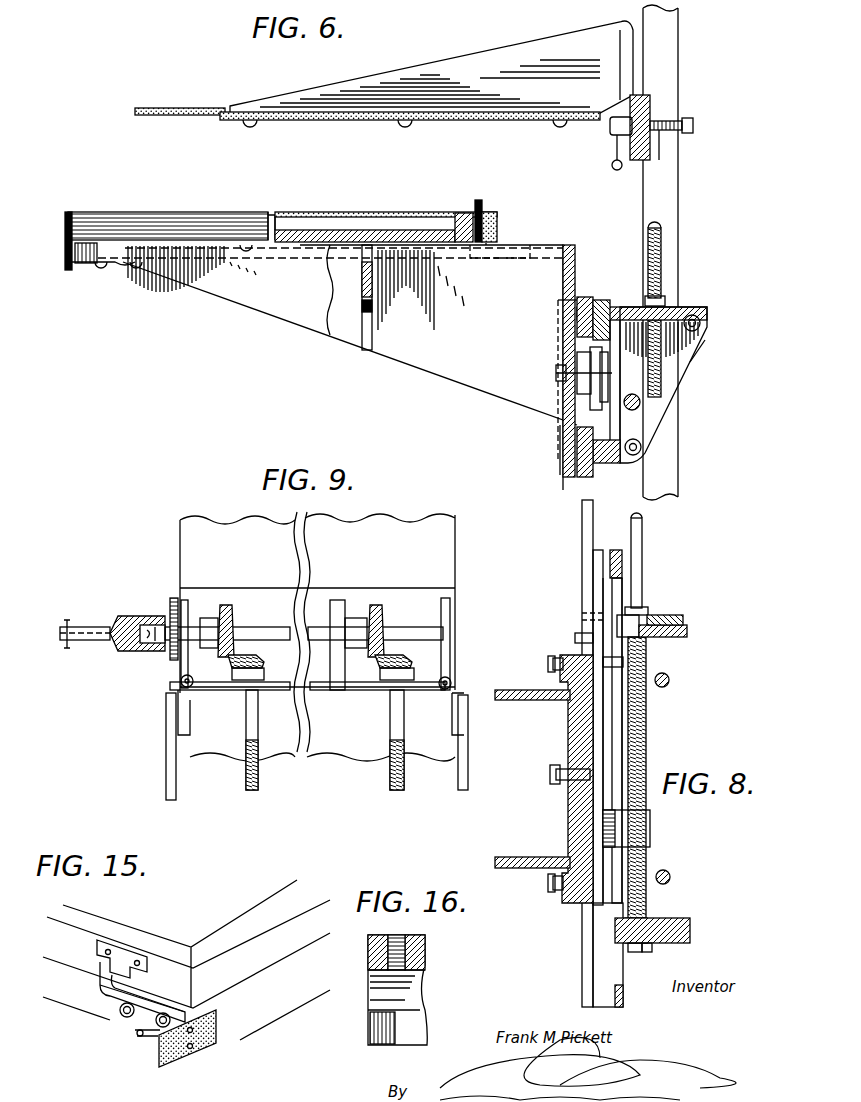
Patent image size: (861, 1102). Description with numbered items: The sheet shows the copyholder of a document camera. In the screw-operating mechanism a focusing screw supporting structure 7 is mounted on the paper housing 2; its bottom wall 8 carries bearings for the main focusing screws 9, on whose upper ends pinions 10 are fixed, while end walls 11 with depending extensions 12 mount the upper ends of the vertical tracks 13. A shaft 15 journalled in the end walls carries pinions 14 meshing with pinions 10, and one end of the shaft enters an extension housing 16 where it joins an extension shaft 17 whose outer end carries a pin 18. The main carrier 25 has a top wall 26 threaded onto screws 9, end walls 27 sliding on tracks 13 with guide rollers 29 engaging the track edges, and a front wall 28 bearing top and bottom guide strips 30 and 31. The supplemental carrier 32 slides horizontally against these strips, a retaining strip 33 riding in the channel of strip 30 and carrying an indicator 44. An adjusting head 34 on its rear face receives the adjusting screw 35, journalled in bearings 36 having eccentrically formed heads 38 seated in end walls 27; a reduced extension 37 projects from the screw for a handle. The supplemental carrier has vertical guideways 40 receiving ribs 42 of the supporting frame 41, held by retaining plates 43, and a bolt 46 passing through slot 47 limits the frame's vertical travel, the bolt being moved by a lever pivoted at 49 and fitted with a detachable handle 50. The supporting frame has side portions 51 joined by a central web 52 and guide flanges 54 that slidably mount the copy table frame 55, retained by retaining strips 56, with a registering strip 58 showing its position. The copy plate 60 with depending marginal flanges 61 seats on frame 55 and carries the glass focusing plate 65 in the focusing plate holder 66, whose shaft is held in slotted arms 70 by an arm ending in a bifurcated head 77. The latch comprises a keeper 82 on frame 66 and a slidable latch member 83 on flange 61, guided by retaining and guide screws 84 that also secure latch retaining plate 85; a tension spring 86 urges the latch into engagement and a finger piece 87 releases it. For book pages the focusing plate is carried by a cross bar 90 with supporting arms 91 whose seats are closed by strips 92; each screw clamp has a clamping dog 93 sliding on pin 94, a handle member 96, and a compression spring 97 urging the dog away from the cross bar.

In FIG. 9, the housing 2 is at (452, 577).
In FIG. 6, the focusing screw supporting structure 7 is at (860, 12).
In FIG. 9, the focusing screw supporting structure 7 is at (173, 687).
In FIG. 6, the bottom wall 8 is at (760, 373).
In FIG. 9, the bottom wall 8 is at (288, 692).
In FIG. 6, the main focusing screws 9 is at (663, 245).
In FIG. 9, the main focusing screws 9 is at (258, 770).
In FIG. 8, the main focusing screws 9 is at (664, 688).
In FIG. 9, the pinions 10 is at (252, 660).
In FIG. 9, the end walls 11 is at (185, 603).
In FIG. 9, the depending extensions 12 is at (190, 717).
In FIG. 6, the vertical tracks 13 is at (662, 196).
In FIG. 9, the vertical tracks 13 is at (180, 757).
In FIG. 8, the vertical tracks 13 is at (675, 616).
In FIG. 9, the pinions 14 is at (230, 604).
In FIG. 9, the shaft 15 is at (270, 626).
In FIG. 9, the extension housing 16 is at (128, 616).
In FIG. 9, the extension shaft 17 is at (92, 627).
In FIG. 9, the pin 18 is at (76, 620).
In FIG. 6, the main carrier 25 is at (708, 332).
In FIG. 8, the main carrier 25 is at (588, 962).
In FIG. 6, the top wall 26 is at (684, 310).
In FIG. 6, the end walls 27 is at (700, 362).
In FIG. 8, the end walls 27 is at (688, 630).
In FIG. 6, the front wall 28 is at (614, 464).
In FIG. 8, the guide rollers 29 is at (650, 953).
In FIG. 6, the top guide strip 30 is at (577, 319).
In FIG. 6, the bottom guide strip 31 is at (599, 466).
In FIG. 8, the bottom guide strip 31 is at (598, 584).
In FIG. 6, the supplemental carrier 32 is at (556, 462).
In FIG. 8, the supplemental carrier 32 is at (584, 911).
In FIG. 6, the retaining strip 33 is at (600, 295).
In FIG. 8, the adjusting head 34 is at (650, 823).
In FIG. 6, the adjusting screw 35 is at (642, 403).
In FIG. 8, the adjusting screw 35 is at (647, 753).
In FIG. 8, the bearings 36 is at (648, 616).
In FIG. 8, the reduced extension 37 is at (642, 545).
In FIG. 8, the eccentrically formed heads 38 is at (637, 953).
In FIG. 6, the vertical guideways 40 is at (576, 470).
In FIG. 8, the vertical guideways 40 is at (570, 681).
In FIG. 6, the supporting frame 41 is at (423, 371).
In FIG. 8, the supporting frame 41 is at (512, 857).
In FIG. 8, the ribs 42 is at (565, 702).
In FIG. 6, the retaining plates 43 is at (562, 468).
In FIG. 8, the retaining plates 43 is at (553, 668).
In FIG. 6, the indicator 44 is at (618, 302).
In FIG. 6, the bolt 46 is at (580, 372).
In FIG. 8, the bolt 46 is at (552, 784).
In FIG. 6, the slot 47 is at (587, 398).
In FIG. 8, the slot 47 is at (576, 769).
In FIG. 8, the pivot 49 is at (618, 663).
In FIG. 8, the detachable handle 50 is at (590, 541).
In FIG. 6, the side portions 51 is at (274, 308).
In FIG. 8, the side portions 51 is at (523, 701).
In FIG. 6, the central web 52 is at (366, 330).
In FIG. 6, the guide flanges 54 is at (530, 258).
In FIG. 6, the copy table frame 55 is at (92, 258).
In FIG. 6, the retaining strips 56 is at (118, 262).
In FIG. 6, the registering strip 58 is at (527, 246).
In FIG. 6, the copy plate 60 is at (347, 210).
In FIG. 6, the depending marginal flanges 61 is at (222, 212).
In FIG. 15, the depending marginal flanges 61 is at (66, 1001).
In FIG. 6, the focusing plate 65 is at (168, 108).
In FIG. 15, the focusing plate holder 66 is at (238, 932).
In FIG. 6, the arms 70 is at (62, 268).
In FIG. 16, the bifurcated head 77 is at (368, 960).
In FIG. 15, the keeper 82 is at (97, 947).
In FIG. 6, the latch member 83 is at (475, 208).
In FIG. 15, the latch member 83 is at (102, 992).
In FIG. 6, the retaining and guide screws 84 is at (492, 230).
In FIG. 15, the retaining and guide screws 84 is at (140, 1005).
In FIG. 6, the latch retaining plate 85 is at (482, 205).
In FIG. 15, the latch retaining plate 85 is at (120, 1017).
In FIG. 15, the tension spring 86 is at (142, 1038).
In FIG. 6, the finger piece 87 is at (490, 244).
In FIG. 15, the finger piece 87 is at (182, 1050).
In FIG. 6, the cross bar 90 is at (645, 96).
In FIG. 6, the focusing plate supporting arms 91 is at (398, 80).
In FIG. 6, the strips 92 is at (333, 122).
In FIG. 6, the clamping dog 93 is at (693, 124).
In FIG. 6, the pin 94 is at (659, 156).
In FIG. 6, the manual operating handle member 96 is at (608, 126).
In FIG. 6, the compression spring 97 is at (670, 119).